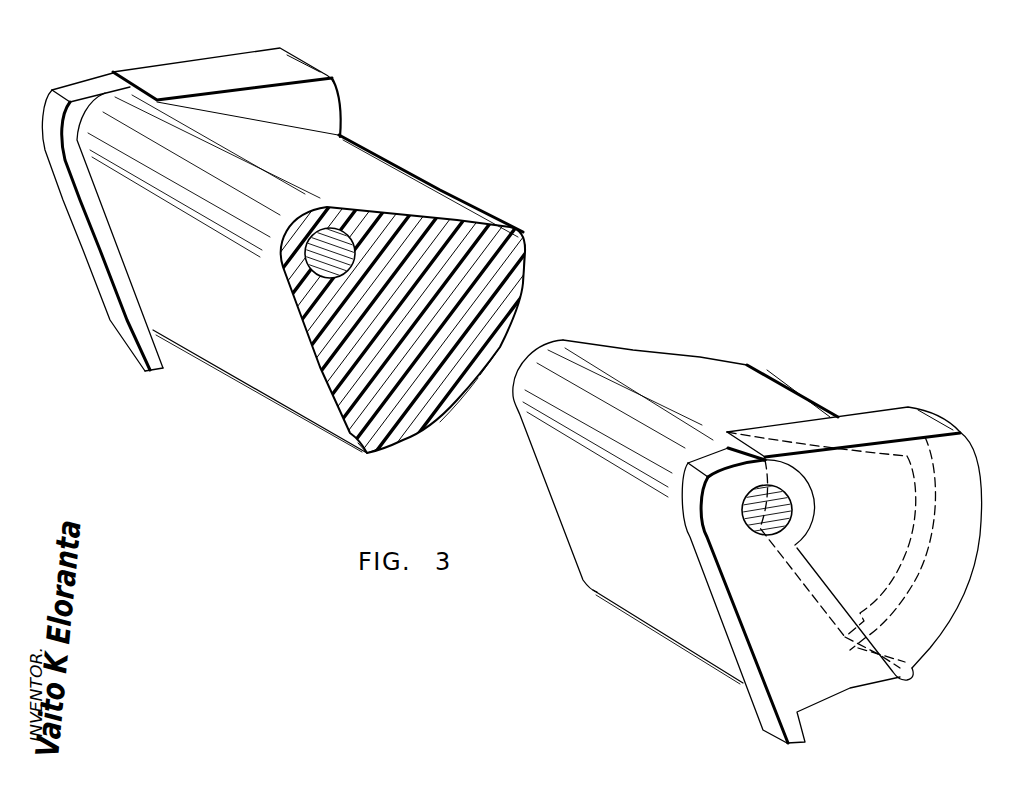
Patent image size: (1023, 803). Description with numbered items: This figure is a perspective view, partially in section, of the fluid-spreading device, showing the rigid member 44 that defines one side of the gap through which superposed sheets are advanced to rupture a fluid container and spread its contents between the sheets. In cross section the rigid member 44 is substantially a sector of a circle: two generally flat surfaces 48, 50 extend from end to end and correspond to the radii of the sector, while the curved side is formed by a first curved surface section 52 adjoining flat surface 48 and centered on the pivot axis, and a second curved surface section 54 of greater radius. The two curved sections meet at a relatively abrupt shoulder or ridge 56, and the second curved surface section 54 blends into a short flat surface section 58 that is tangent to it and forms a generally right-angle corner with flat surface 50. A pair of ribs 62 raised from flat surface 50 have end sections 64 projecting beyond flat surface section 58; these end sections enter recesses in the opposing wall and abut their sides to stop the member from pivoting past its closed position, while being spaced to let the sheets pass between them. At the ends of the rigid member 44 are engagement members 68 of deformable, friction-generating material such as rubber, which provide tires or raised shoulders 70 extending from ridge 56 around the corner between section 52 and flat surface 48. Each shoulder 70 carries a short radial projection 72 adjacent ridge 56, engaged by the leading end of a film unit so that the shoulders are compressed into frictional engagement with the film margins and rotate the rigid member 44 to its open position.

The rigid member 44 is at (532, 232).
The flat surface 48 is at (373, 167).
The flat surface 50 is at (273, 382).
The first curved surface section 52 is at (528, 287).
The second curved surface section 54 is at (443, 408).
The shoulder or ridge 56 is at (474, 385).
The short flat surface section 58 is at (370, 456).
The ribs 62 is at (97, 261).
The end sections 64 is at (137, 355).
The engagement members 68 is at (222, 72).
The shoulders 70 is at (337, 79).
The radial projection 72 is at (908, 682).